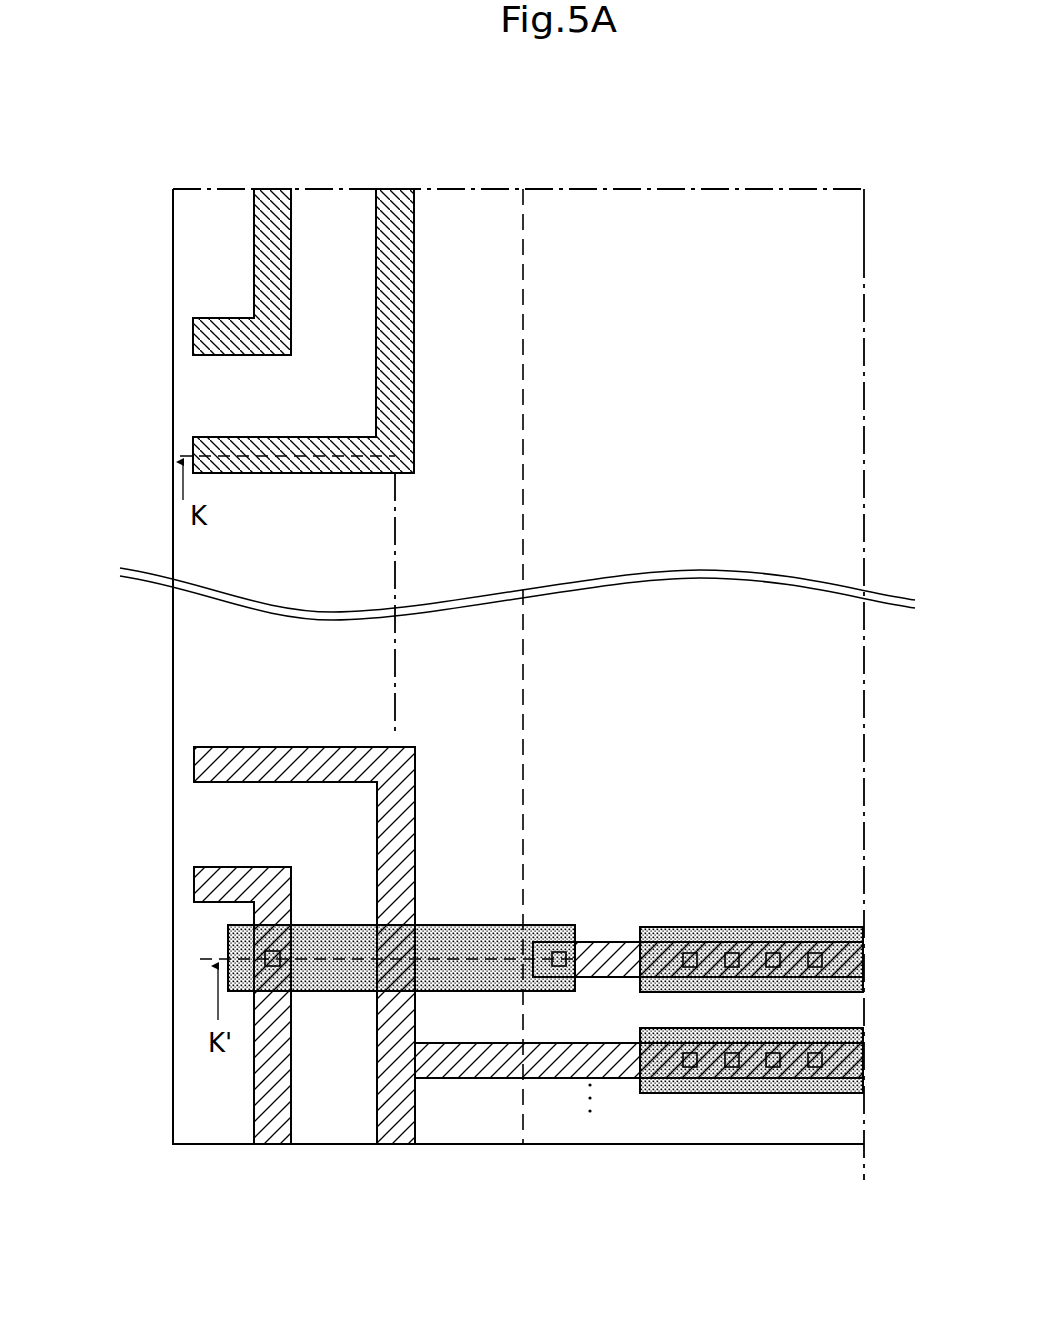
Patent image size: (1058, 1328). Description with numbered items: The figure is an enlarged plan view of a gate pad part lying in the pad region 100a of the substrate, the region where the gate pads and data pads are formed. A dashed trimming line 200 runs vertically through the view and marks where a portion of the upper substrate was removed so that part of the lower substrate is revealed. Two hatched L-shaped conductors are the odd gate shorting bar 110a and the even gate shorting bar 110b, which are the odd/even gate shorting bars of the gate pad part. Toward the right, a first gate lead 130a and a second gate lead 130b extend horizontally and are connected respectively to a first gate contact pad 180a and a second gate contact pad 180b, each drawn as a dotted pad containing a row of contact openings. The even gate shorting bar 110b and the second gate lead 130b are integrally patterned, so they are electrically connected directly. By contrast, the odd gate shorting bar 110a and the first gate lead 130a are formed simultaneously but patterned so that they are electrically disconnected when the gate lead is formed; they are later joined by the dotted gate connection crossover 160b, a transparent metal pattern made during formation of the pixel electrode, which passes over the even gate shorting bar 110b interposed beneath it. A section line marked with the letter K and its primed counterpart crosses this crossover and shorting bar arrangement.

The pad region 100a is at (217, 540).
The trimming line 200 is at (523, 186).
The odd gate shorting bar 110a is at (193, 333).
The even gate shorting bar 110b is at (193, 443).
The gate connection crossover 160b is at (333, 980).
The first gate lead 130a is at (603, 980).
The second gate lead 130b is at (473, 1078).
The first gate contact pad 180a is at (813, 992).
The second gate contact pad 180b is at (713, 1093).